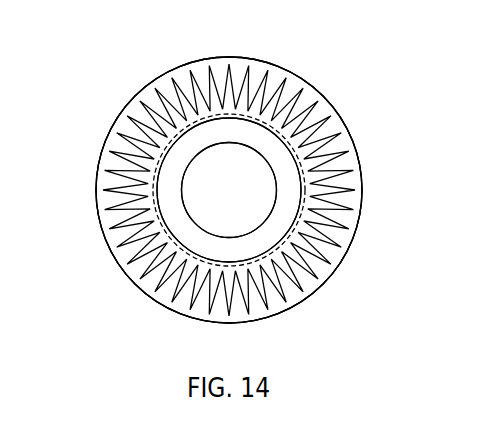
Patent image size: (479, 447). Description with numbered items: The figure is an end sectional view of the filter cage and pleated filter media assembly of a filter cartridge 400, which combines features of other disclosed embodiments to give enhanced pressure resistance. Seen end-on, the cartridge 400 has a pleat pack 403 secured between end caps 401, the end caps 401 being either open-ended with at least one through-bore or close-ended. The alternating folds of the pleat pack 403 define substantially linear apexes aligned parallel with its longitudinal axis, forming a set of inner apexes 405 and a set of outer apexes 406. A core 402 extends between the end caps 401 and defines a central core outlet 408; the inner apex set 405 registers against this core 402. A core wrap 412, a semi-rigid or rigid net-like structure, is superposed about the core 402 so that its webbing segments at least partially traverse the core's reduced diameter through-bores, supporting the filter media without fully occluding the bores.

The filter cartridge 400 is at (159, 60).
The end caps 401 is at (122, 107).
The core 402 is at (287, 208).
The pleat pack 403 is at (333, 128).
The inner apexes 405 is at (165, 298).
The outer apexes 406 is at (270, 65).
The core outlet 408 is at (245, 200).
The core wrap 412 is at (298, 303).